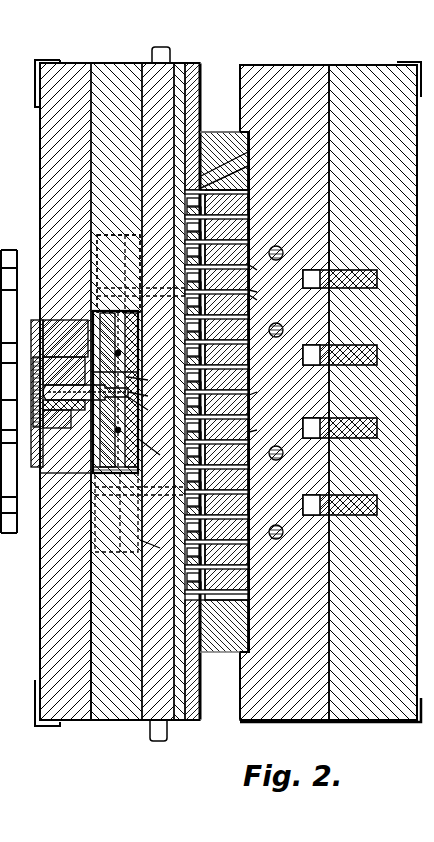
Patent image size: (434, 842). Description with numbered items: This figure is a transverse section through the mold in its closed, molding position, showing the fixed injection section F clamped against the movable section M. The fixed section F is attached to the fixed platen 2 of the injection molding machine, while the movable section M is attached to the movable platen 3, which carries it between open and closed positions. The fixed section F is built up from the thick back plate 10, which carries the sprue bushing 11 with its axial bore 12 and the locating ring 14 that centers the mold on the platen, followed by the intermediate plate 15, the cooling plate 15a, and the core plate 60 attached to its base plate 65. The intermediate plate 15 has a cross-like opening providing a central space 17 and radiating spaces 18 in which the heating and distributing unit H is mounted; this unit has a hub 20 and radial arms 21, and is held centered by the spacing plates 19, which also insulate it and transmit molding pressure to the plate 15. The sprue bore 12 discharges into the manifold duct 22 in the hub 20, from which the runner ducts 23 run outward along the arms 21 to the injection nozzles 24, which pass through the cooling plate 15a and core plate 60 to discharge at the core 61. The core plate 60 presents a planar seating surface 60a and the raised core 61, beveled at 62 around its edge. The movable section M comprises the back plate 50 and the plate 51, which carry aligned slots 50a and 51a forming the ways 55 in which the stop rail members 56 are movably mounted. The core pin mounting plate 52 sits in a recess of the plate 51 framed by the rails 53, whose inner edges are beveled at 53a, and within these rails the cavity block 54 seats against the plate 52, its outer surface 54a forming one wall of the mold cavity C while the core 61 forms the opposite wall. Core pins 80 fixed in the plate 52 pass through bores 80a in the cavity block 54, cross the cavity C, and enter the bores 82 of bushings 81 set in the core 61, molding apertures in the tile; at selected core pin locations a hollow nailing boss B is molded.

The fixed injection section F is at (78, 63).
The movable section M is at (266, 67).
The fixed platen 2 is at (35, 65).
The movable platen 3 is at (400, 738).
The back plate 10 is at (55, 164).
The sprue bushing 11 is at (64, 430).
The axial bore 12 is at (90, 345).
The locating ring 14 is at (93, 273).
The intermediate plate 15 is at (105, 80).
The cooling plate 15a is at (160, 77).
The central space 17 is at (131, 392).
The radiating spaces 18 is at (85, 403).
The spacing plates 19 is at (148, 408).
The hub 20 is at (64, 401).
The arms 21 is at (105, 510).
The manifold duct 22 is at (148, 396).
The runner duct 23 is at (148, 381).
The injection nozzle 24 is at (140, 290).
The back plate 50 is at (345, 73).
The slots 50a is at (350, 265).
The plate 51 is at (260, 720).
The slots 51a is at (290, 254).
The core pin mounting plate 52 is at (244, 198).
The rails 53 is at (216, 130).
The bevels 53a is at (218, 172).
The cavity block 54 is at (262, 271).
The cavity surface 54a is at (266, 301).
The ways 55 is at (289, 333).
The stop rail member 56 is at (376, 279).
The core plate 60 is at (192, 82).
The seating surface 60a is at (208, 186).
The core 61 is at (232, 186).
The core bevels 62 is at (182, 596).
The base plate 65 is at (178, 75).
The core pins 80 is at (252, 397).
The bores 80a is at (255, 434).
The bushings 81 is at (154, 545).
The bushing bores 82 is at (154, 447).
The nailing boss B is at (260, 388).
The mold cavity C is at (242, 228).
The heating and distributing unit H is at (65, 334).